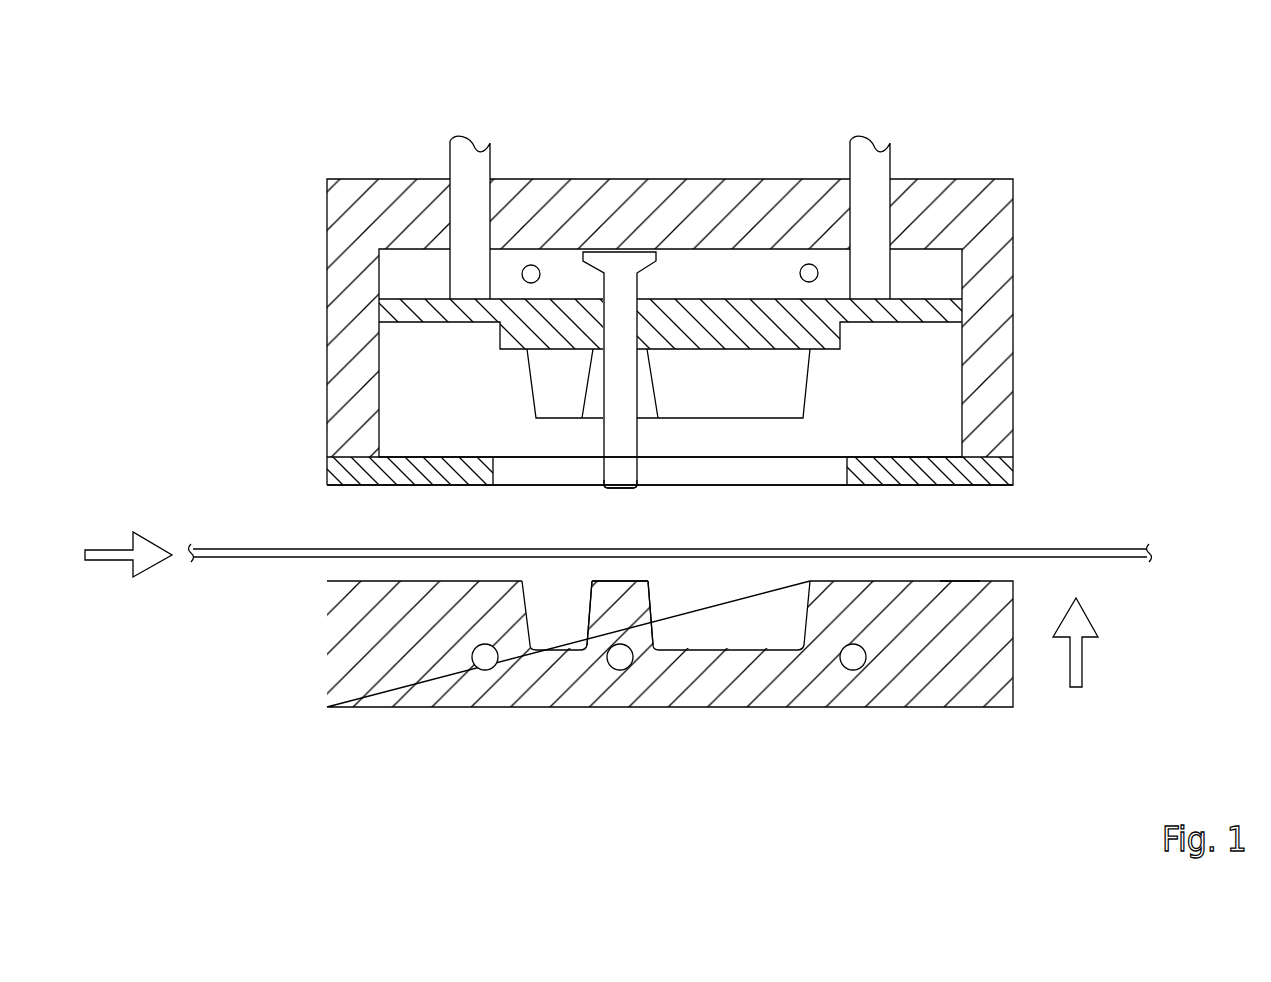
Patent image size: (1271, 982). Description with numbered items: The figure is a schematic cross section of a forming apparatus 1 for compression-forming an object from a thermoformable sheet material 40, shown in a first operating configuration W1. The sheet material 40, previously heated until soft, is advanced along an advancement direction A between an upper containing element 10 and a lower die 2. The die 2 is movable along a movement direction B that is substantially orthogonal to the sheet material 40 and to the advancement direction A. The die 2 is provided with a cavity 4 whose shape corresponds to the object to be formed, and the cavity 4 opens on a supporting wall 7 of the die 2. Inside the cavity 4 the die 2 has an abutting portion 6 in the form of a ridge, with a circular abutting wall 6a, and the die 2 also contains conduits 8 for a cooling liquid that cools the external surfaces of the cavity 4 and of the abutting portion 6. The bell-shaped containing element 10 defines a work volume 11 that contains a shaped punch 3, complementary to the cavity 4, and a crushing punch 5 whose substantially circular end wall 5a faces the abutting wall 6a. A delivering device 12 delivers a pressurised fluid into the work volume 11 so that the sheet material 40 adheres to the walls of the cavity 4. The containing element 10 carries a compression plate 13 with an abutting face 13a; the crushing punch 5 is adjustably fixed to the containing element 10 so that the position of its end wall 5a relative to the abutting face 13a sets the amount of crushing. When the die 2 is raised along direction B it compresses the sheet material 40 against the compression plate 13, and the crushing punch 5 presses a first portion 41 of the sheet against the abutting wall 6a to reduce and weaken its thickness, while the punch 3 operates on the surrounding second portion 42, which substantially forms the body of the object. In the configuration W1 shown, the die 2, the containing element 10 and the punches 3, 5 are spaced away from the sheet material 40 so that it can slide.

The forming apparatus 1 is at (252, 143).
The die 2 is at (315, 680).
The punch 3 is at (545, 382).
The cavity 4 is at (552, 622).
The crushing punch 5 is at (627, 380).
The end wall 5a is at (623, 490).
The abutting portion 6 is at (590, 604).
The abutting wall 6a is at (617, 581).
The supporting wall 7 is at (958, 580).
The conduits 8 is at (485, 657).
The containing element 10 is at (355, 215).
The work volume 11 is at (910, 425).
The delivering device 12 is at (533, 273).
The compression plate 13 is at (340, 472).
The abutting face 13a is at (403, 487).
The sheet material 40 is at (278, 556).
The first portion 41 is at (610, 548).
The second portion 42 is at (765, 548).
The advancement direction A is at (120, 550).
The movement direction B is at (1174, 362).
The first operating configuration W1 is at (1115, 235).